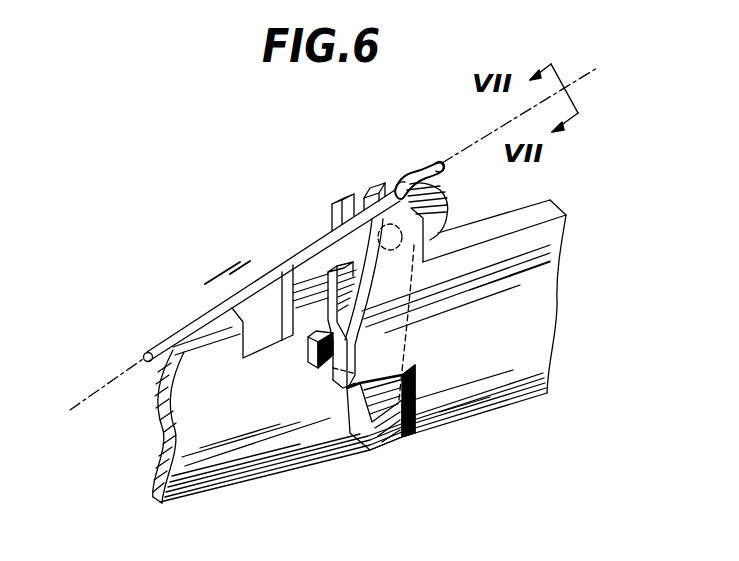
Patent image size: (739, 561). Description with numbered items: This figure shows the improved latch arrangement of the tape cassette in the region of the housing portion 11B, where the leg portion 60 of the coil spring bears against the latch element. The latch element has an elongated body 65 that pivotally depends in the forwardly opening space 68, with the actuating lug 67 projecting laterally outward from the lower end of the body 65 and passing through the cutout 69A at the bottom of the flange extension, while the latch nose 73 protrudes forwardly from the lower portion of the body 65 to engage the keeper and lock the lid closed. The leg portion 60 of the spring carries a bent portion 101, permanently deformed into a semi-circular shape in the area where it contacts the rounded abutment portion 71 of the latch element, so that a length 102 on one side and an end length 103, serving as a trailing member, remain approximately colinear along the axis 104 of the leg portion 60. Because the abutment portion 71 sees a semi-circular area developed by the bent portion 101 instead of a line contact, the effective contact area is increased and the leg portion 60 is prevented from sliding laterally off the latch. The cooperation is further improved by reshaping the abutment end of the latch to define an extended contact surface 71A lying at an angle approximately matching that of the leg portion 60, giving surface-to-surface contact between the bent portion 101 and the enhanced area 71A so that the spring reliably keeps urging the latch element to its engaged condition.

The housing portion 11B is at (503, 413).
The leg portion 60 is at (219, 295).
The elongated body 65 is at (397, 333).
The actuating lug 67 is at (395, 448).
The forwardly opening space 68 is at (312, 392).
The cutout 69A is at (340, 394).
The abutment portion 71 is at (437, 199).
The extended contact surface 71A is at (412, 175).
The latch nose 73 is at (306, 358).
The bent portion 101 is at (400, 181).
The length 102 is at (258, 277).
The end length 103 is at (436, 168).
The axis 104 is at (330, 261).